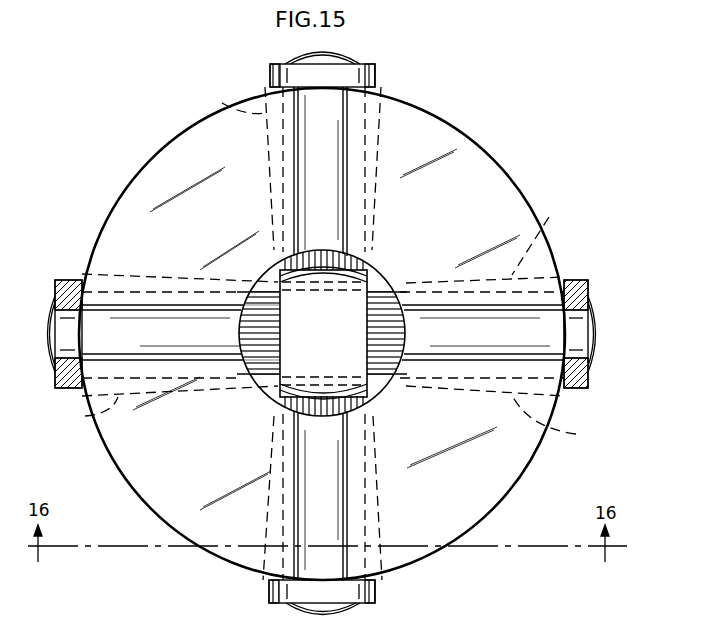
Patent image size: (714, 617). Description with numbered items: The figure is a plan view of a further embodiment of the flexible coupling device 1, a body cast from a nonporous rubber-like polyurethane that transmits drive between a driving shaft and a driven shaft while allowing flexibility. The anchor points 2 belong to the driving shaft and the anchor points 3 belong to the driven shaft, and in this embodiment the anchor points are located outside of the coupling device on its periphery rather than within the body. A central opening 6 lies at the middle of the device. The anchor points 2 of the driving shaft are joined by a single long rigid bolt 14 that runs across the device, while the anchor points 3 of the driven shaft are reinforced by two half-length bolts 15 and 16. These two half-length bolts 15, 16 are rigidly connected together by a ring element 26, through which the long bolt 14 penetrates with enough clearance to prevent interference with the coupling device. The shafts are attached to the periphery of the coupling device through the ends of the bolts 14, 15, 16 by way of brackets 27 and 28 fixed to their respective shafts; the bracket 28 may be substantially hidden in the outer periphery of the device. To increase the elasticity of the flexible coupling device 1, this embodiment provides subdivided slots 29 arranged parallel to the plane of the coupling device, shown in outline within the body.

The flexible coupling device 1 is at (491, 147).
The anchor points for the driving shaft 2 is at (148, 305).
The anchor points for the driven shaft 3 is at (345, 150).
The central opening 6 is at (268, 392).
The single rigid bolt 14 is at (263, 293).
The half-length bolt 15 is at (367, 267).
The half-length bolt 16 is at (367, 396).
The ring element 26 is at (331, 328).
The bracket 27 is at (63, 280).
The bracket 28 is at (378, 75).
The subdivided slots 29 is at (220, 102).